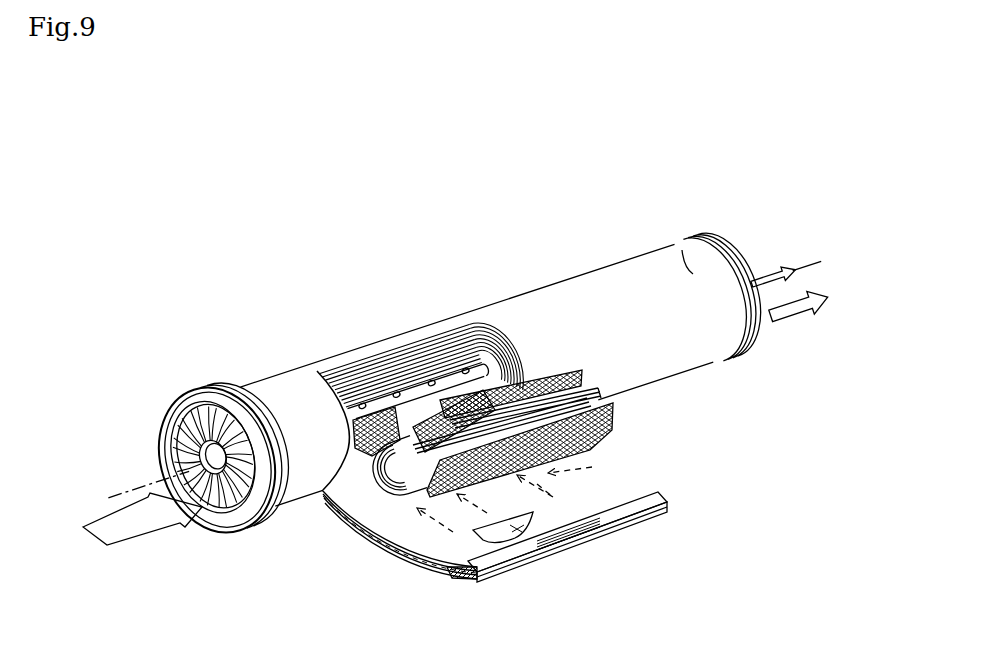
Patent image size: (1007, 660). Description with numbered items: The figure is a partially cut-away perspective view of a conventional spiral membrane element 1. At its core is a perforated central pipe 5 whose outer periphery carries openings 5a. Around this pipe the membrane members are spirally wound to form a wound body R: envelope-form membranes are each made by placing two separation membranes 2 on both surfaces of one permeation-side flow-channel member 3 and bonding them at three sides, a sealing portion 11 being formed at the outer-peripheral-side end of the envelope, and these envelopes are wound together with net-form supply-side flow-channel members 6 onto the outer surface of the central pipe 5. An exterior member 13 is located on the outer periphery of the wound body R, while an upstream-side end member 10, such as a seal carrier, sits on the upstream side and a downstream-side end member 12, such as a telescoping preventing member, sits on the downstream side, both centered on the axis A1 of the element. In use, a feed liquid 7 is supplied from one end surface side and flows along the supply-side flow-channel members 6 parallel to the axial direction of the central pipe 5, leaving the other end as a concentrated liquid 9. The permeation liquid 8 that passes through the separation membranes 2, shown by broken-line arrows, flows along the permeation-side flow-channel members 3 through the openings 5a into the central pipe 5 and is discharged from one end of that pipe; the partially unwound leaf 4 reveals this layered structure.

The membrane element 1 is at (692, 409).
The separation membrane 2 is at (598, 400).
The permeation-side flow-channel member 3 is at (353, 520).
The membrane leaf (envelope) 4 is at (650, 548).
The central pipe 5 is at (458, 382).
The opening 5a is at (357, 403).
The supply-side flow-channel member 6 is at (556, 371).
The feed liquid 7 is at (124, 537).
The permeation liquid 8 is at (772, 230).
The concentrated liquid 9 is at (795, 316).
The upstream-side end member 10 is at (204, 383).
The sealing portion 11 is at (568, 531).
The downstream-side end member 12 is at (730, 361).
The exterior member 13 is at (694, 238).
The wound body R is at (502, 292).
The axis of element A1 is at (114, 490).